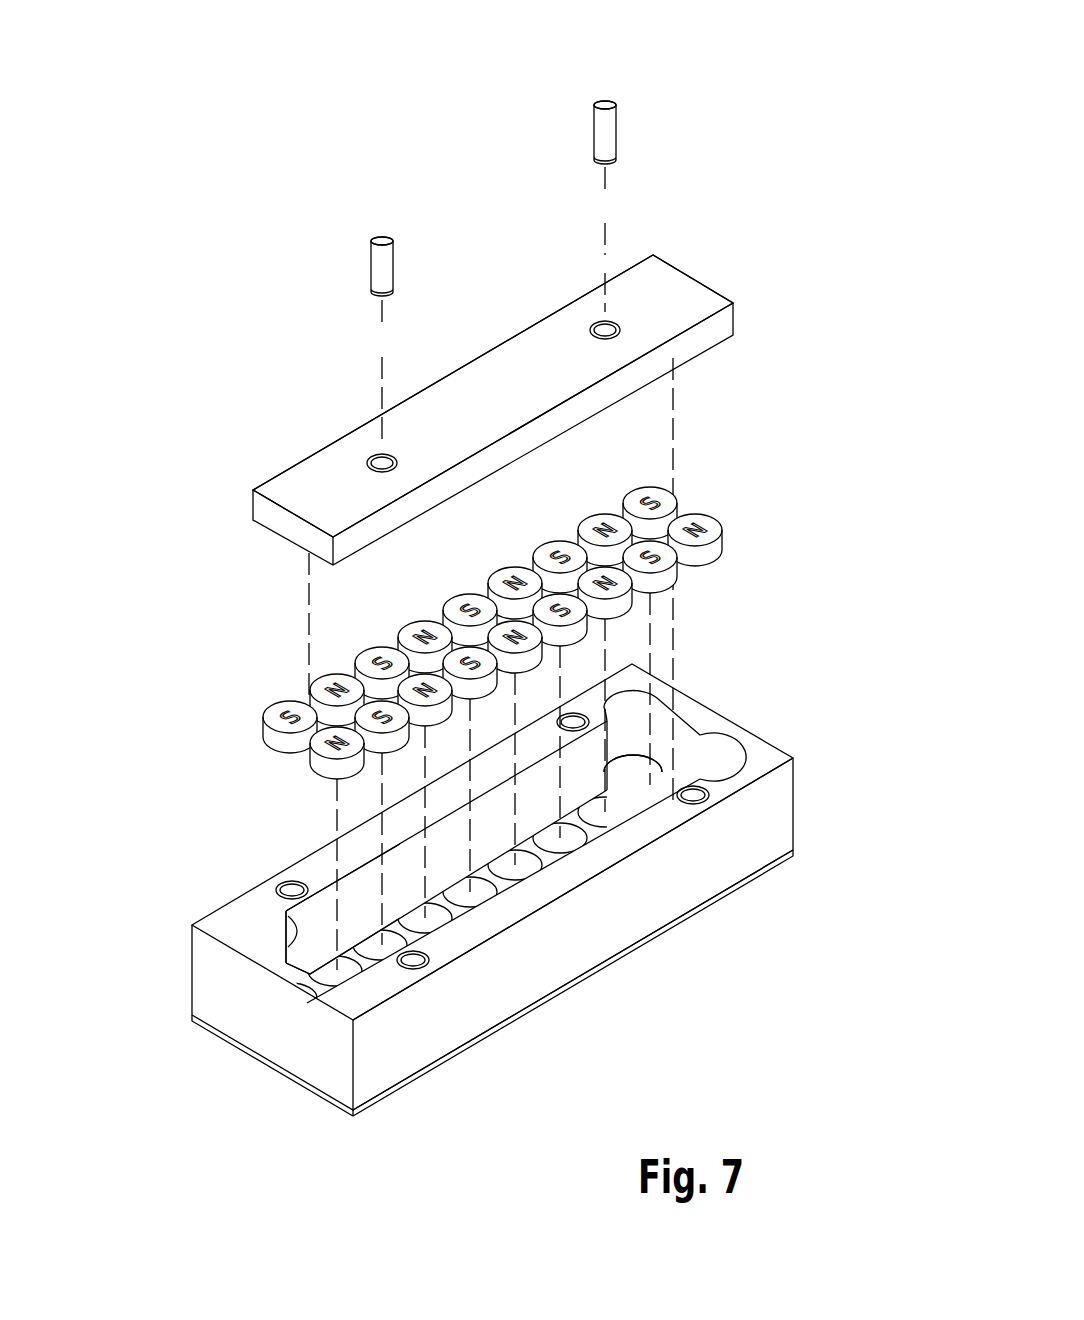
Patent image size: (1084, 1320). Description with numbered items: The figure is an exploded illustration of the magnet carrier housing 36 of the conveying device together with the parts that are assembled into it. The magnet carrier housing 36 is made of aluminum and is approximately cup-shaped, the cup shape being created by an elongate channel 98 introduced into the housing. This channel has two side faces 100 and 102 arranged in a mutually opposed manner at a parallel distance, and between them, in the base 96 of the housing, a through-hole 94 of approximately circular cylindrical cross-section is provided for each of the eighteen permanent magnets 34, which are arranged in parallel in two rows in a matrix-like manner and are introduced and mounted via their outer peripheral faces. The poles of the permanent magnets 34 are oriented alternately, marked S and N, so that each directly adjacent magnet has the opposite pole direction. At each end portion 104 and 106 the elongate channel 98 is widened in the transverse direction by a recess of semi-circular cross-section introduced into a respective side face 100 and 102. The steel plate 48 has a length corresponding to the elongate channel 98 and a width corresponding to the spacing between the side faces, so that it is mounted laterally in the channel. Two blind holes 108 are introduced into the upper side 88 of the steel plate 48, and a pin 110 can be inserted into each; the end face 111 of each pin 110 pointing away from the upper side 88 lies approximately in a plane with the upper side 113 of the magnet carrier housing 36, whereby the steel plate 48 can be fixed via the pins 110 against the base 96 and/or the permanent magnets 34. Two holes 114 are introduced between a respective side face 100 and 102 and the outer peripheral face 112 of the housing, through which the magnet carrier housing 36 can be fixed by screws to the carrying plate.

The permanent magnet 34 is at (264, 720).
The magnet carrier housing 36 is at (770, 818).
The steel plate 48 is at (672, 290).
The upper side of the steel plate 88 is at (521, 397).
The through-hole 94 is at (668, 774).
The base 96 is at (623, 833).
The elongate channel 98 is at (340, 1003).
The side face 100 is at (323, 906).
The side face 102 is at (500, 880).
The end portion 104 is at (313, 972).
The end portion 106 is at (715, 750).
The blind hole 108 is at (380, 462).
The pin 110 is at (384, 273).
The end face of the pin 111 is at (383, 238).
The outer peripheral face 112 is at (373, 1053).
The upper side of the magnet carrier housing 113 is at (213, 906).
The hole 114 is at (413, 970).